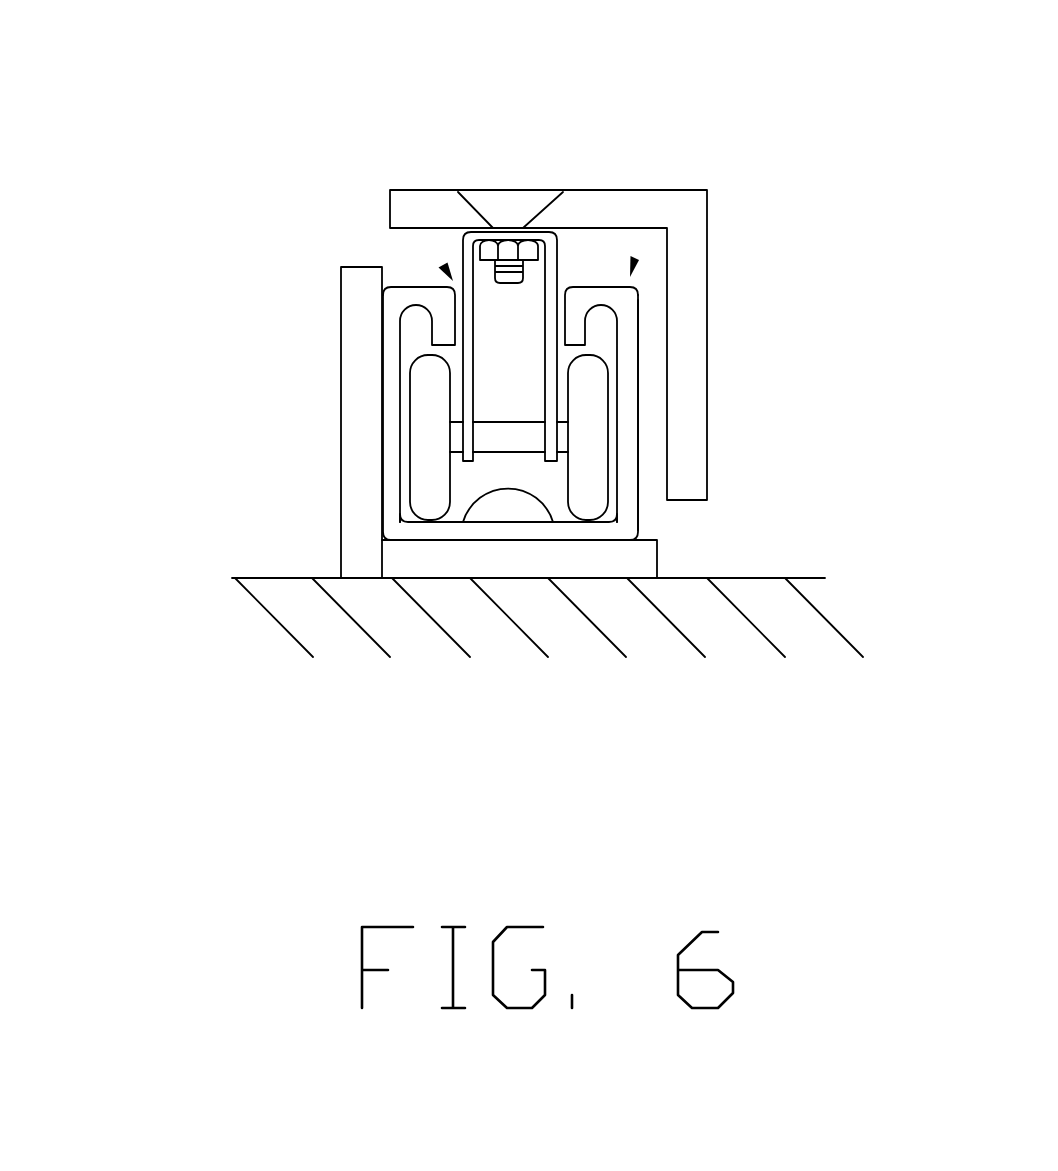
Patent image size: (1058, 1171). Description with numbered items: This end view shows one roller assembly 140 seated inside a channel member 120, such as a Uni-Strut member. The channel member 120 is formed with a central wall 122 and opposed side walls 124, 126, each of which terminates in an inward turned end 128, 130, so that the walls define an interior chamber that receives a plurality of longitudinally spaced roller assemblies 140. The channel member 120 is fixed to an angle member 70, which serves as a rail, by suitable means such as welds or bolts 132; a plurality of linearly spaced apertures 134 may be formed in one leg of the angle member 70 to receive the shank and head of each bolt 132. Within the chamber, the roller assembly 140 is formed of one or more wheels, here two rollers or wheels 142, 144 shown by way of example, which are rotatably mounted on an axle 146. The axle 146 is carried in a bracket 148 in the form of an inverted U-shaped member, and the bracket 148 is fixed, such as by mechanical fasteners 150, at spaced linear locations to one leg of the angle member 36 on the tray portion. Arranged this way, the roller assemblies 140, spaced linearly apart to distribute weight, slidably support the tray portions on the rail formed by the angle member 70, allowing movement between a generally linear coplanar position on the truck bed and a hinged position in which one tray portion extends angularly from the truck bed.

The angle member 36 is at (687, 235).
The angle member 70 is at (372, 548).
The channel member 120 is at (633, 262).
The central wall 122 is at (640, 524).
The side wall 124 is at (638, 367).
The side wall 126 is at (380, 338).
The inward turned end 128 is at (565, 287).
The inward turned end 130 is at (452, 280).
The bolt 132 is at (515, 507).
The aperture 134 is at (533, 540).
The roller assembly 140 is at (448, 272).
The wheel 142 is at (590, 405).
The wheel 144 is at (430, 408).
The axle 146 is at (490, 435).
The bracket 148 is at (472, 232).
The mechanical fastener 150 is at (502, 208).